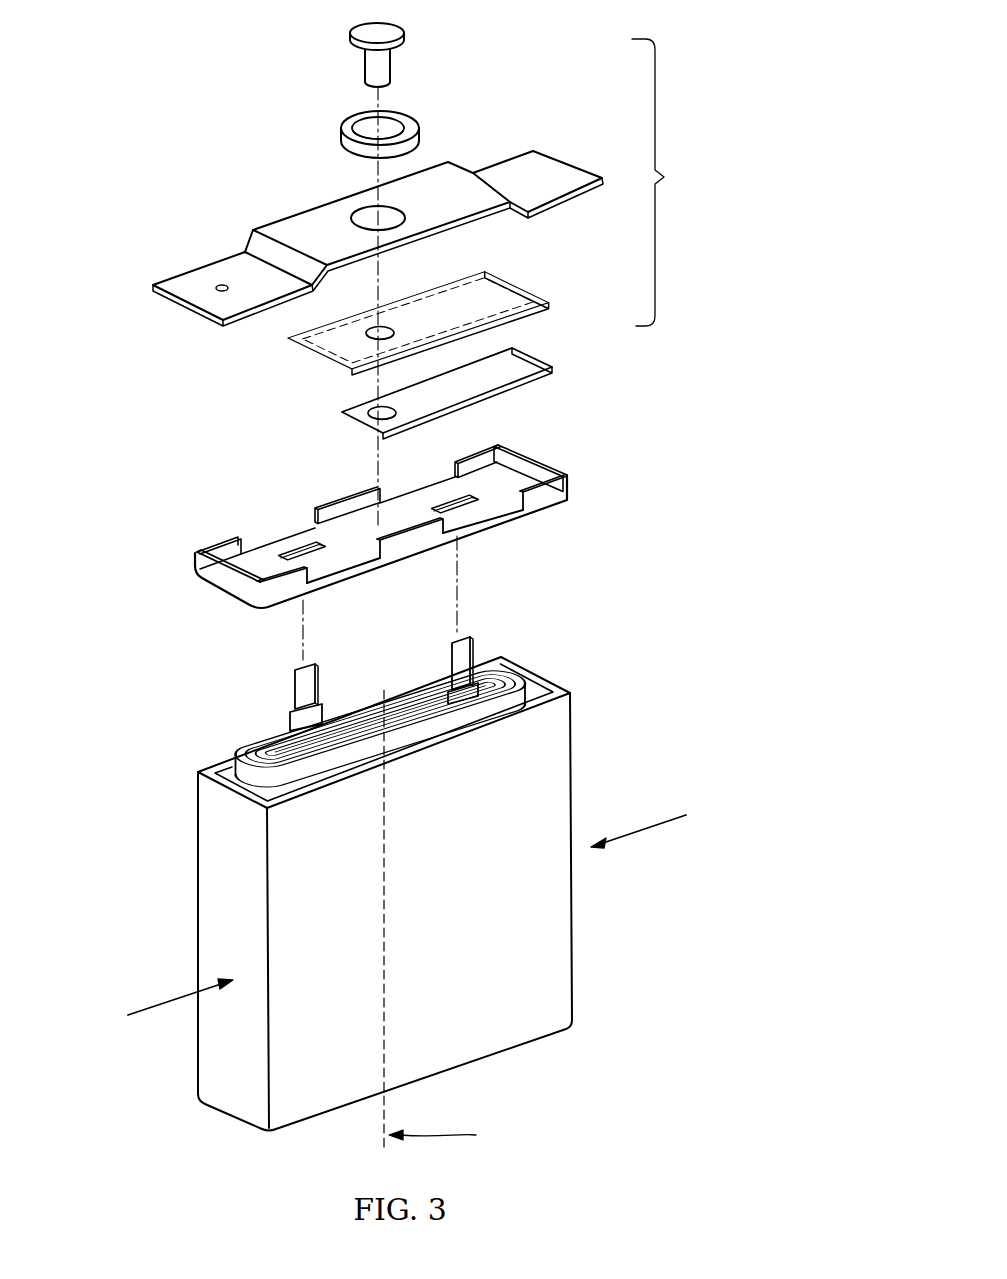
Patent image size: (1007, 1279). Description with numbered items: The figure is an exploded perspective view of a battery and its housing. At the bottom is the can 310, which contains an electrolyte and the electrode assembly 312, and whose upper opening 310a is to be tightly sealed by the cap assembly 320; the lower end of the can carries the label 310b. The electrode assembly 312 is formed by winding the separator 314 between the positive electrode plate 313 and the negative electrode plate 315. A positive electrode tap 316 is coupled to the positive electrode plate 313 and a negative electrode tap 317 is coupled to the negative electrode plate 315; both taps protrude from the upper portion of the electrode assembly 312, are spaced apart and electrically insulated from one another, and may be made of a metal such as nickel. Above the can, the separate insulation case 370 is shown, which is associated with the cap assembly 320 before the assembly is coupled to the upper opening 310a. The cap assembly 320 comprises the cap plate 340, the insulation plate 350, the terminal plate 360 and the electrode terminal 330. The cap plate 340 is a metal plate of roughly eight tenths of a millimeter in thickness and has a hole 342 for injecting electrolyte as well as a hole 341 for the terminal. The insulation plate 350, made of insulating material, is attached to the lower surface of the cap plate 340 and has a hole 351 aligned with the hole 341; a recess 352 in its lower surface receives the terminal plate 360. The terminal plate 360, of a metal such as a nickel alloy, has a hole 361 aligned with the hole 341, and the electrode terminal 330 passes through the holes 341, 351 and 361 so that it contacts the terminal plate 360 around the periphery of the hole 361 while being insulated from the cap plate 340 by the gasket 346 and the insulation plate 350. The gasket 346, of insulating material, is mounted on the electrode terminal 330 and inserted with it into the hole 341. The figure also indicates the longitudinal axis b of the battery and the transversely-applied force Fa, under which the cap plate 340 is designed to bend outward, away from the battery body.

The can 310 is at (549, 915).
The upper opening 310a is at (537, 693).
The bottom of can 310b is at (542, 1036).
The electrode assembly 312 is at (425, 678).
The positive electrode plate 313 is at (521, 675).
The separator 314 is at (513, 670).
The negative electrode plate 315 is at (390, 675).
The positive electrode tap 316 is at (295, 703).
The negative electrode tap 317 is at (450, 665).
The cap assembly 320 is at (673, 182).
The electrode terminal 330 is at (387, 33).
The cap plate 340 is at (546, 176).
The hole 341 is at (366, 213).
The hole 342 is at (218, 287).
The gasket 346 is at (345, 123).
The insulation plate 350 is at (530, 289).
The hole 351 is at (366, 334).
The recess 352 is at (352, 330).
The terminal plate 360 is at (520, 360).
The hole 361 is at (352, 423).
The insulation case 370 is at (203, 568).
The transversely-applied force Fa is at (407, 914).
The longitudinal axis b is at (441, 1135).